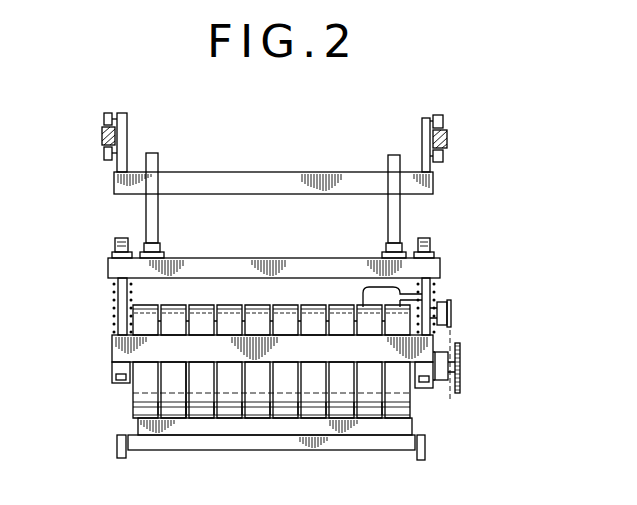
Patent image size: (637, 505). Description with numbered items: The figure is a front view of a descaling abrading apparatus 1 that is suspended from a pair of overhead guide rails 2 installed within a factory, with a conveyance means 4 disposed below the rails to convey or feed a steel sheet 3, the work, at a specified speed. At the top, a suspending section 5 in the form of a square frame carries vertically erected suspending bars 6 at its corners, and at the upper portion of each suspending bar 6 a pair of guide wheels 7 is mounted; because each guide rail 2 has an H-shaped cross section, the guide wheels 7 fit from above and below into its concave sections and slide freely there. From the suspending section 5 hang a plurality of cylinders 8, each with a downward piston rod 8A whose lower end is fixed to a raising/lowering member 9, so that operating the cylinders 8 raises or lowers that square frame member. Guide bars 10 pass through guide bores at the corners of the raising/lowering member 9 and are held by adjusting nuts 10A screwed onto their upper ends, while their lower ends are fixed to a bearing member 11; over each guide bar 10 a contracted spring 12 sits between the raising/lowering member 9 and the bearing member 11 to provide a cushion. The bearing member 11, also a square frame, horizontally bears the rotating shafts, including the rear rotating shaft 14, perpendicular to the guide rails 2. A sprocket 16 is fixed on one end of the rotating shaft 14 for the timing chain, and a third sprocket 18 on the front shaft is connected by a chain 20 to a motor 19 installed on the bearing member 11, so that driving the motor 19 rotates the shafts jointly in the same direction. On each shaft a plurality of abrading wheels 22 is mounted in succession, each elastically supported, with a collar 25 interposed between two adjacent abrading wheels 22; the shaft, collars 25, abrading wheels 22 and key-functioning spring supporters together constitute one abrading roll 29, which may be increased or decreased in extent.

The descaling abrading apparatus 1 is at (448, 227).
The guide rail 2 is at (102, 136).
The steel sheet 3 is at (140, 424).
The conveyance means 4 is at (148, 445).
The suspending section 5 is at (222, 172).
The suspending bar 6 is at (127, 128).
The guide wheel 7 is at (104, 117).
The cylinder 8 is at (152, 153).
The piston rod 8A is at (160, 250).
The raising/lowering member 9 is at (262, 258).
The guide bar 10 is at (118, 298).
The adjusting nut 10A is at (112, 256).
The bearing member 11 is at (112, 348).
The spring 12 is at (114, 283).
The rotating shaft 14 is at (128, 388).
The sprocket 16 is at (459, 386).
The sprocket 18 is at (448, 385).
The motor 19 is at (437, 293).
The chain 20 is at (449, 326).
The abrading wheel 22 is at (140, 403).
The collar 25 is at (188, 400).
The abrading roll 29 is at (417, 393).